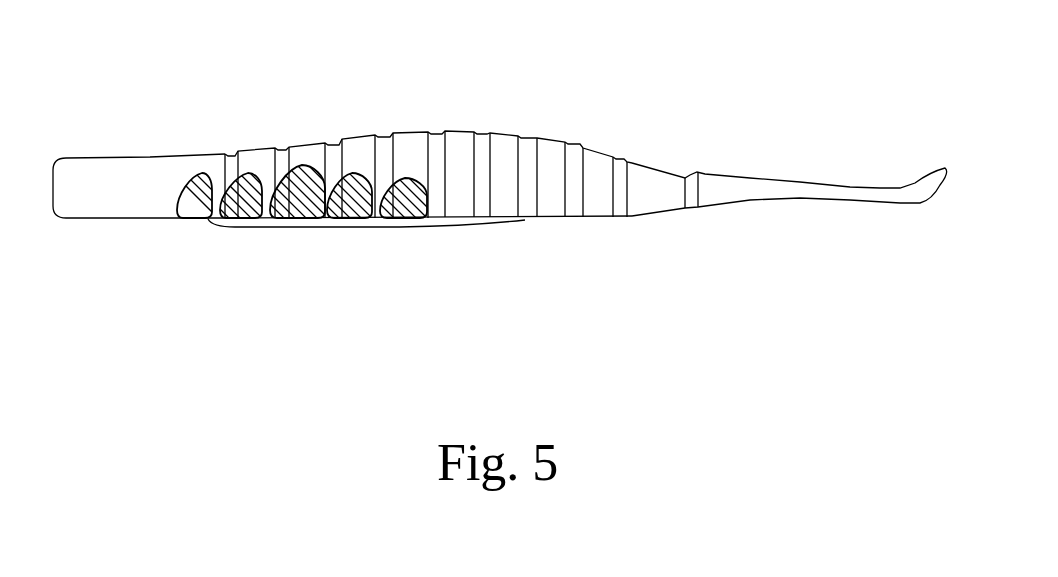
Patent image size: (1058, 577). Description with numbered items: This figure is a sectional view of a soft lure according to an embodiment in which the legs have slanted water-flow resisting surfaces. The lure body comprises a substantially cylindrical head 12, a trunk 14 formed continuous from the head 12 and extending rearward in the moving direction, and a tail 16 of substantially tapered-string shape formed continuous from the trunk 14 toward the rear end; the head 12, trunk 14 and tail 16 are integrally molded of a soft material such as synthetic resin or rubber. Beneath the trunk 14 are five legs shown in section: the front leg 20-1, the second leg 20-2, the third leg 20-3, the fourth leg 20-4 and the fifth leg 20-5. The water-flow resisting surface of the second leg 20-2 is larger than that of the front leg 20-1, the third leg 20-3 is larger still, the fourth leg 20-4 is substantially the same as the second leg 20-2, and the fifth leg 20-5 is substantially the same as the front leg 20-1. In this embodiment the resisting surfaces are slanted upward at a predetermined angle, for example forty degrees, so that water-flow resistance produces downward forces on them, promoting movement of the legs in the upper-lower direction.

The head 12 is at (90, 170).
The trunk 14 is at (412, 148).
The tail 16 is at (722, 185).
The front leg 20-1 is at (190, 210).
The second leg 20-2 is at (238, 216).
The third leg 20-3 is at (285, 216).
The fourth leg 20-4 is at (338, 214).
The fifth leg 20-5 is at (398, 212).